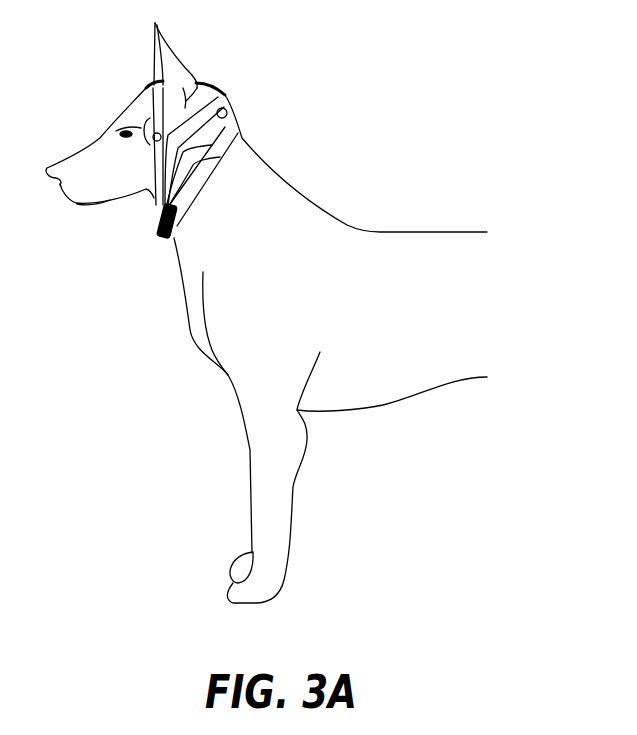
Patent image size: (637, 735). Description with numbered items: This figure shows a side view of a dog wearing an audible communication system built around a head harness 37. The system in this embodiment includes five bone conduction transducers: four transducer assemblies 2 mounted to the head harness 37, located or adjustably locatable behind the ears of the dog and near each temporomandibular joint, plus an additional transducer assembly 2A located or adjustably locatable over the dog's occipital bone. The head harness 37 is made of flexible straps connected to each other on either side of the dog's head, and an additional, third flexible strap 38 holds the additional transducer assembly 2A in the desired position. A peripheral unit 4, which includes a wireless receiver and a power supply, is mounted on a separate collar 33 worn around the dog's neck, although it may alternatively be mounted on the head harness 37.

The transducer assembly 2 is at (150, 127).
The additional transducer assembly 2A is at (227, 100).
The peripheral unit 4 is at (157, 217).
The collar 33 is at (237, 133).
The head harness 37 is at (148, 100).
The flexible strap 38 is at (202, 84).